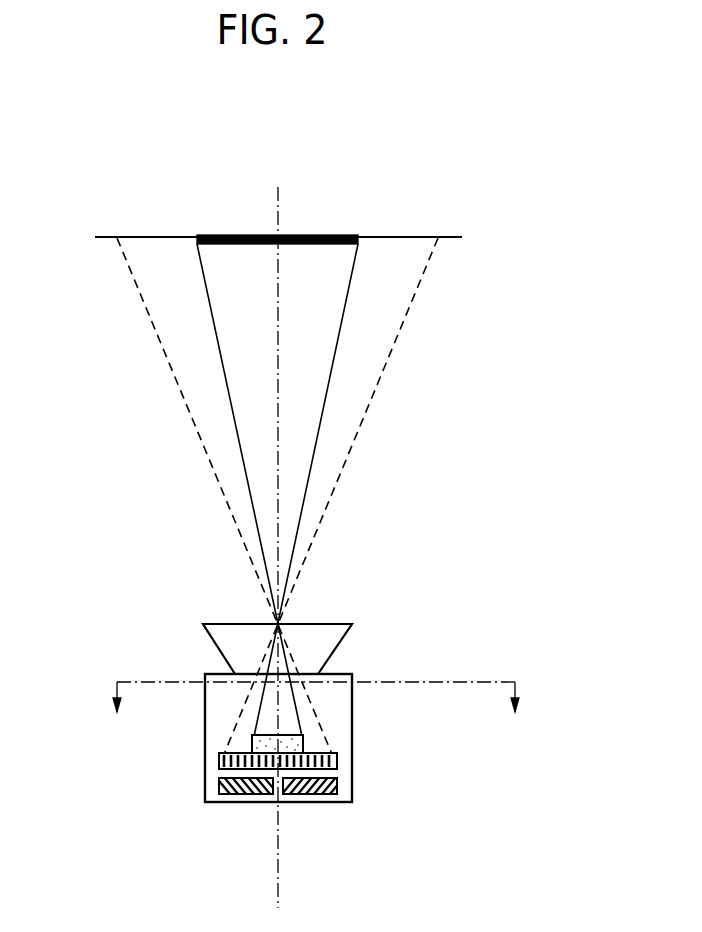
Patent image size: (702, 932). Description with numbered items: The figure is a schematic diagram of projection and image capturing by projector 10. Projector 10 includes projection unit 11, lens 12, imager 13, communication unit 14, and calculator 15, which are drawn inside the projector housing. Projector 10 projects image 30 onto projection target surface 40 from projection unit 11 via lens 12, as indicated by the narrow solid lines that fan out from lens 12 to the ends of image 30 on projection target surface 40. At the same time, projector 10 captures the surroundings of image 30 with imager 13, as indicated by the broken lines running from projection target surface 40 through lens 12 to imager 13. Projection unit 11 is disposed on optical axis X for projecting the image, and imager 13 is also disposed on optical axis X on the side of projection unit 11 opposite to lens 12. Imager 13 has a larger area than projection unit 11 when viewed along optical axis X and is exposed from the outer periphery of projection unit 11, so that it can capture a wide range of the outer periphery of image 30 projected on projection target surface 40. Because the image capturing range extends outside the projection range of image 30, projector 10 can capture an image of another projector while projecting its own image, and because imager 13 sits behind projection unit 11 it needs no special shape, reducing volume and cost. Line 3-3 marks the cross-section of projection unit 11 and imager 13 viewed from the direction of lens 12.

The projector 10 is at (362, 790).
The projection unit 11 is at (303, 743).
The lens 12 is at (332, 657).
The imager 13 is at (337, 762).
The communication unit 14 is at (310, 794).
The calculator 15 is at (245, 794).
The image 30 is at (243, 236).
The projection target surface 40 is at (165, 236).
The optical axis X is at (279, 453).
The line 3- 3 is at (316, 680).